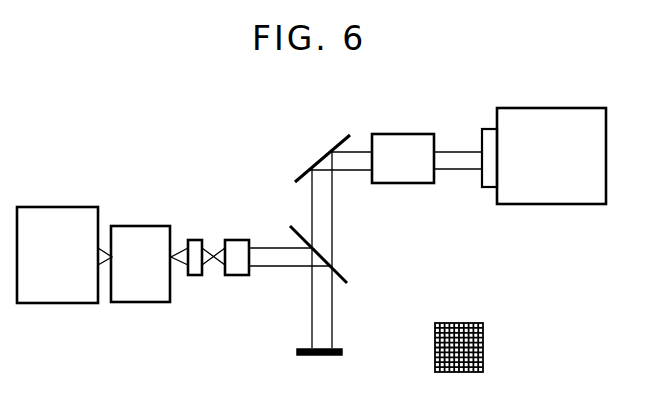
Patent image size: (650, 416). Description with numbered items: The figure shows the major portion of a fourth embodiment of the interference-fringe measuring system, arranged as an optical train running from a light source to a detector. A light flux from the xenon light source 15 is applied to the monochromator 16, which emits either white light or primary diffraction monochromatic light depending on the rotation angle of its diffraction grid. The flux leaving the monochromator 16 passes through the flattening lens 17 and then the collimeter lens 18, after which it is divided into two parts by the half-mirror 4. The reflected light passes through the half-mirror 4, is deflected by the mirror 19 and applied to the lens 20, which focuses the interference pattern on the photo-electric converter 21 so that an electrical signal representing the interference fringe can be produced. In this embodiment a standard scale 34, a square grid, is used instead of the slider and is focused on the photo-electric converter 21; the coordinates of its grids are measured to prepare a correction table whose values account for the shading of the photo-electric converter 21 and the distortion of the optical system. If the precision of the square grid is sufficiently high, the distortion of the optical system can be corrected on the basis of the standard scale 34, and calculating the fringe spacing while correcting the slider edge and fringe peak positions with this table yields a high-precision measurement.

The xenon light source 15 is at (60, 207).
The monochromator 16 is at (138, 226).
The flattening lens 17 is at (196, 240).
The collimeter lens 18 is at (238, 240).
The mirror 19 is at (343, 139).
The half-mirror 4 is at (341, 277).
The lens 20 is at (400, 134).
The photo-electric converter 21 is at (532, 108).
The standard scale 34 is at (436, 354).